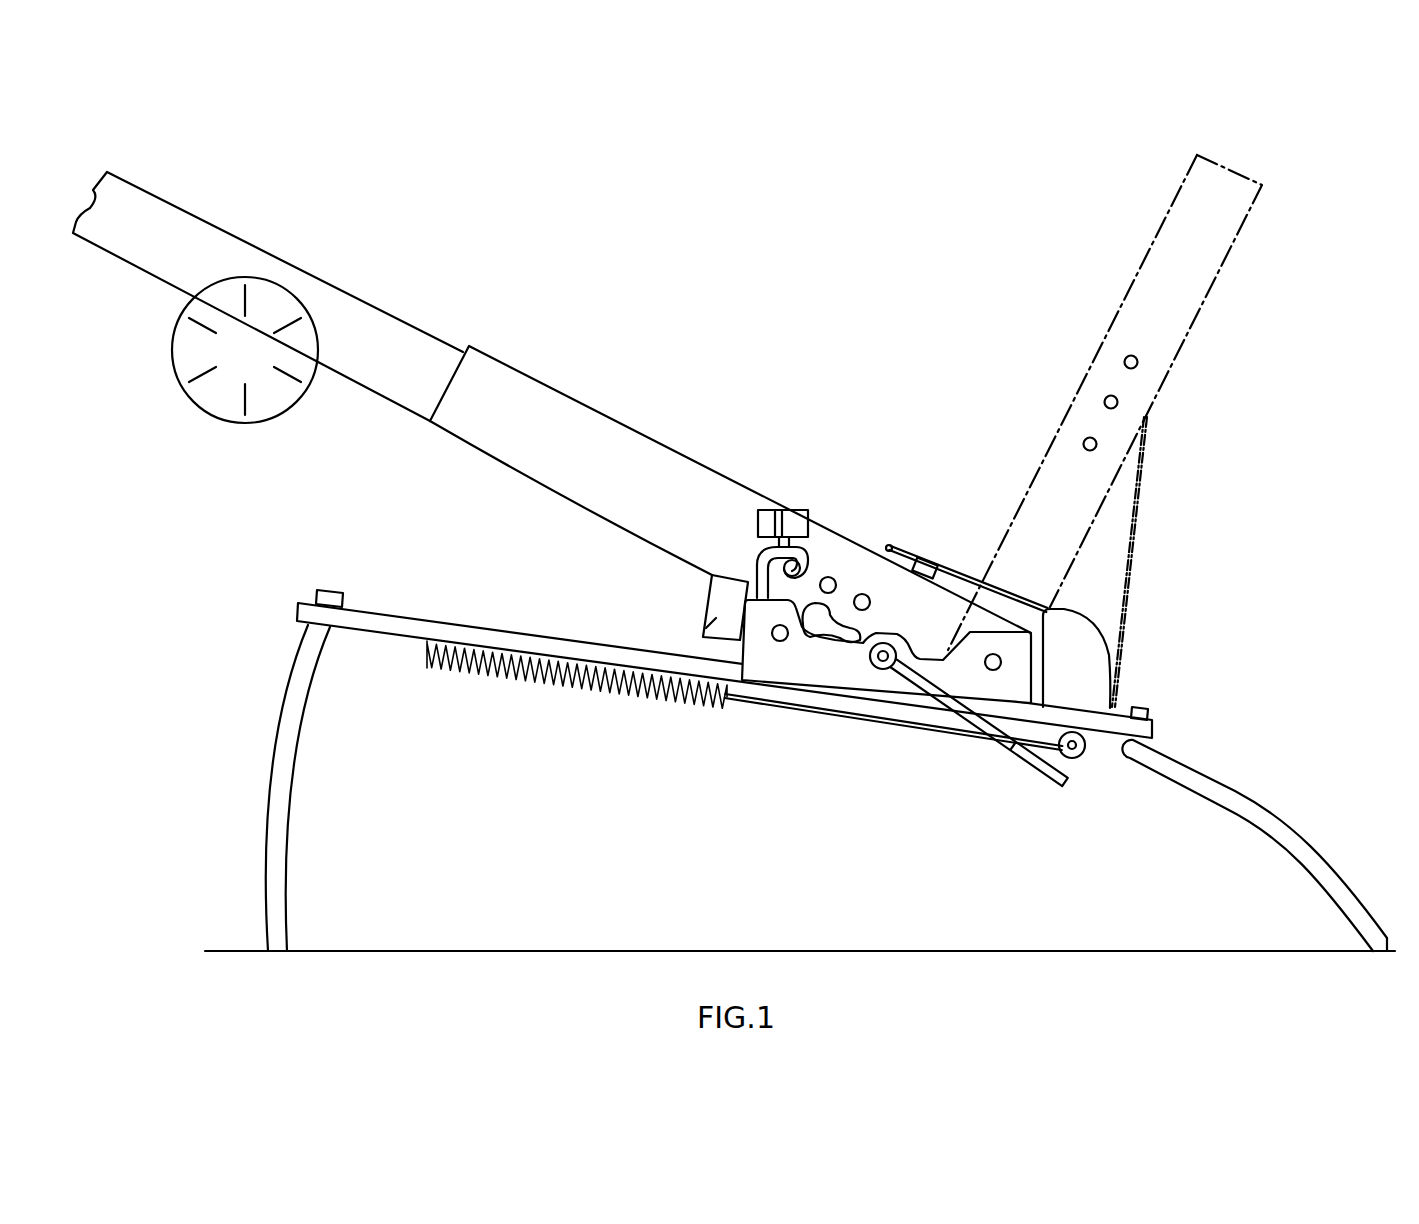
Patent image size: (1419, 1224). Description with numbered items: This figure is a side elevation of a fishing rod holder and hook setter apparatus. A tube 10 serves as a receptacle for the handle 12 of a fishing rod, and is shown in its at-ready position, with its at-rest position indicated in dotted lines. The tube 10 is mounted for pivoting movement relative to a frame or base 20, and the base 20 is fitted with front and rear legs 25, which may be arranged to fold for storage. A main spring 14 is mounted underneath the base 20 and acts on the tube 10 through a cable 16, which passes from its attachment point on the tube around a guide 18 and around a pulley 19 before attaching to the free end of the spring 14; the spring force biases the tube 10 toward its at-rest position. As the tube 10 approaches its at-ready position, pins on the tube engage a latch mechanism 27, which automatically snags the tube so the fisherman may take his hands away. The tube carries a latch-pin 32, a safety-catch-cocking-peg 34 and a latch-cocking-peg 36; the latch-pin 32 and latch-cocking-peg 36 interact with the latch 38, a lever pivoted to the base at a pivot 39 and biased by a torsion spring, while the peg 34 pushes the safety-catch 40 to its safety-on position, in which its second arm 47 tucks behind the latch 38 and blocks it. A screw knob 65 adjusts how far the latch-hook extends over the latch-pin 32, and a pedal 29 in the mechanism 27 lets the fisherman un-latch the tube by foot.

The tube 10 is at (545, 382).
The handle 12 is at (367, 318).
The main spring 14 is at (672, 703).
The cable 16 is at (966, 573).
The guide 18 is at (1093, 667).
The pulley 19 is at (1080, 755).
The base 20 is at (520, 640).
The legs 25 is at (292, 768).
The latch mechanism 27 is at (840, 662).
The pedal 29 is at (1053, 777).
The latch-pin 32 is at (800, 562).
The safety-catch-cocking-peg 34 is at (835, 578).
The latch-cocking-peg 36 is at (870, 602).
The latch 38 is at (697, 517).
The pivot 39 is at (780, 640).
The safety-catch 40 is at (712, 628).
The second arm 47 is at (710, 593).
The screw knob 65 is at (790, 513).